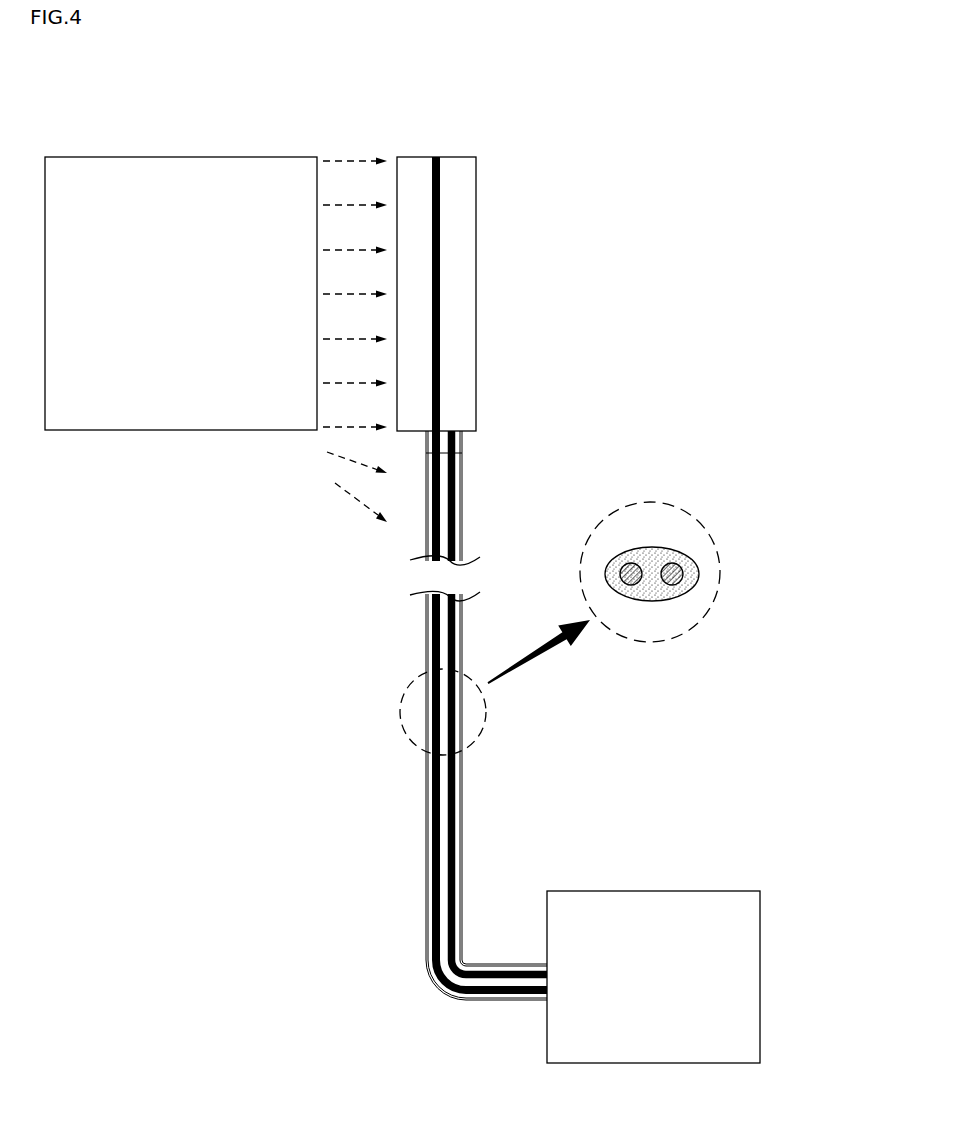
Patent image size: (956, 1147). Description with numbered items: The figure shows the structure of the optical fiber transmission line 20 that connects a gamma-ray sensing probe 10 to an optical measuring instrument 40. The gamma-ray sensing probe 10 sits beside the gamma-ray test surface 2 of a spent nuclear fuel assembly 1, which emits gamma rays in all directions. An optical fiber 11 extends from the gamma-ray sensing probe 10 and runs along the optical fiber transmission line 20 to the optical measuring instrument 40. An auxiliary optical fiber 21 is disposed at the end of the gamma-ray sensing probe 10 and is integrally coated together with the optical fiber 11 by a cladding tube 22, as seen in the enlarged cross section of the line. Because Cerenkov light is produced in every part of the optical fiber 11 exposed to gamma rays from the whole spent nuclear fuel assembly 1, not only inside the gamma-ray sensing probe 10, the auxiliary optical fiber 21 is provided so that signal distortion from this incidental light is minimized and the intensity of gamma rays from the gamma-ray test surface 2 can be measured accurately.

The spent nuclear fuel assembly 1 is at (128, 176).
The gamma-ray test surface 2 is at (317, 364).
The gamma-ray sensing probe 10 is at (489, 185).
The optical fiber 11 is at (438, 225).
The optical fiber transmission line 20 is at (482, 781).
The auxiliary optical fiber 21 is at (455, 484).
The cladding tube 22 is at (655, 551).
The optical measuring instrument 40 is at (762, 970).